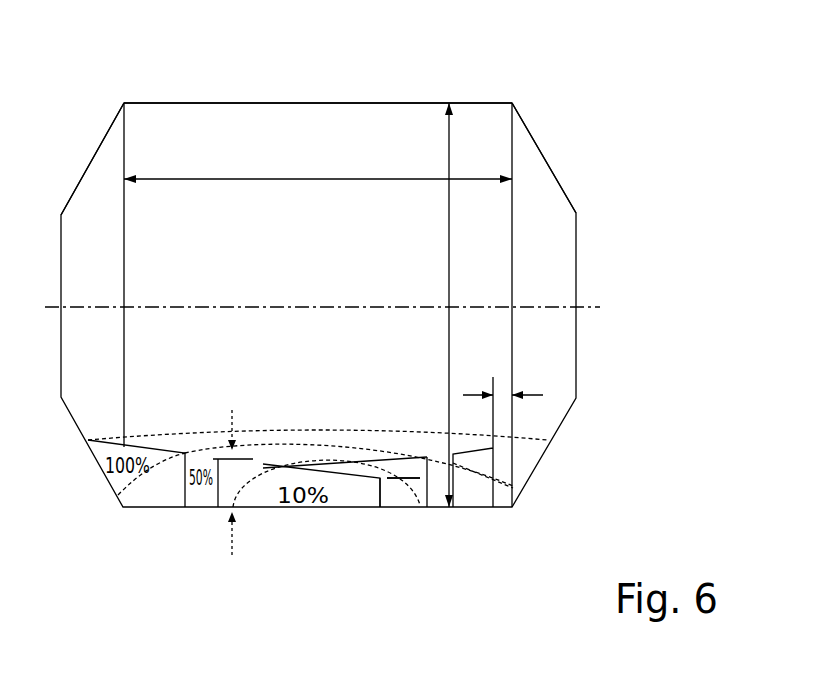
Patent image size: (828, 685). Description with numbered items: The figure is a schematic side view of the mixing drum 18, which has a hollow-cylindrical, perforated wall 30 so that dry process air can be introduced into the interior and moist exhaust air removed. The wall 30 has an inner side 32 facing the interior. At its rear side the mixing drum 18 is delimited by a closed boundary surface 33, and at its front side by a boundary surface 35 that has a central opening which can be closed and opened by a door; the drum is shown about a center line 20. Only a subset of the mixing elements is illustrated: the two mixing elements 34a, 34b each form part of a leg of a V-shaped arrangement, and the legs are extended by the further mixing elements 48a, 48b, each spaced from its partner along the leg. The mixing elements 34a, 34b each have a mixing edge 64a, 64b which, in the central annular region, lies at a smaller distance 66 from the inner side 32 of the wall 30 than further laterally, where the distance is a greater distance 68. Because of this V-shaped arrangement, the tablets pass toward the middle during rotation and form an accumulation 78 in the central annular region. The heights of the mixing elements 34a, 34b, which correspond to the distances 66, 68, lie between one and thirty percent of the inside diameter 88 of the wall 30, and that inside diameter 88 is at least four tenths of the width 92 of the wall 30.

The mixing drum 18 is at (497, 85).
The central axis 20 is at (490, 306).
The wall 30 is at (286, 103).
The inner side 32 is at (264, 496).
The closed boundary surface 33 is at (552, 170).
The boundary surface 35 is at (100, 150).
The mixing element 34a is at (348, 503).
The mixing element 34b is at (392, 510).
The further mixing element 48a is at (155, 503).
The further mixing element 48b is at (478, 510).
The mixing edge 64a is at (308, 467).
The mixing edge 64b is at (402, 460).
The smaller distance 66 is at (405, 493).
The greater distance 68 is at (232, 527).
The accumulation 78 is at (348, 460).
The inside diameter 88 is at (449, 252).
The width 92 is at (300, 181).